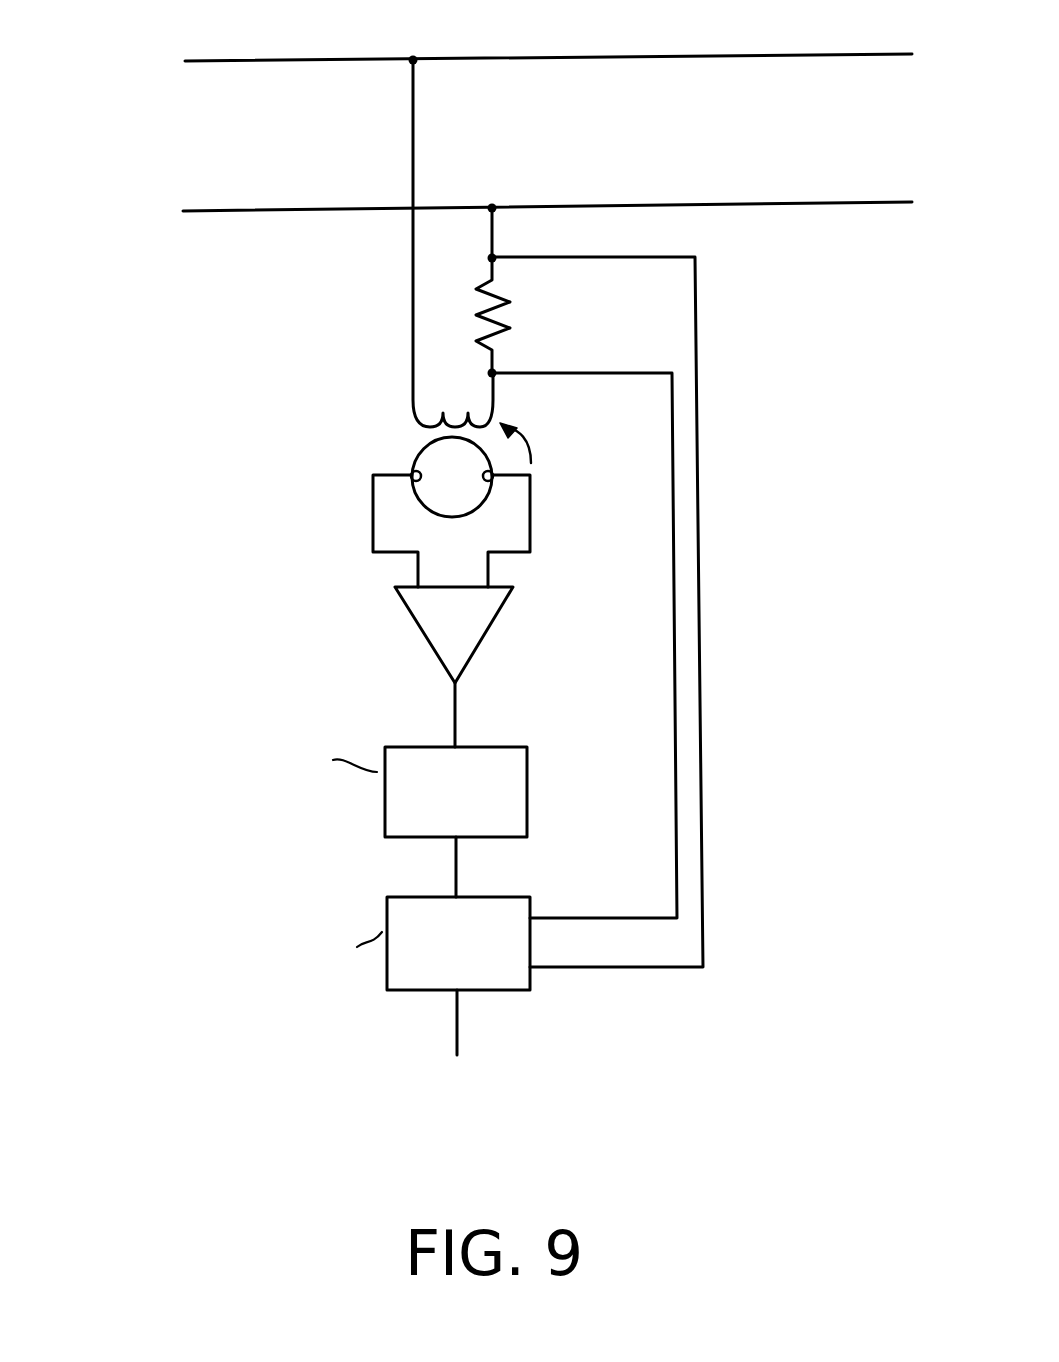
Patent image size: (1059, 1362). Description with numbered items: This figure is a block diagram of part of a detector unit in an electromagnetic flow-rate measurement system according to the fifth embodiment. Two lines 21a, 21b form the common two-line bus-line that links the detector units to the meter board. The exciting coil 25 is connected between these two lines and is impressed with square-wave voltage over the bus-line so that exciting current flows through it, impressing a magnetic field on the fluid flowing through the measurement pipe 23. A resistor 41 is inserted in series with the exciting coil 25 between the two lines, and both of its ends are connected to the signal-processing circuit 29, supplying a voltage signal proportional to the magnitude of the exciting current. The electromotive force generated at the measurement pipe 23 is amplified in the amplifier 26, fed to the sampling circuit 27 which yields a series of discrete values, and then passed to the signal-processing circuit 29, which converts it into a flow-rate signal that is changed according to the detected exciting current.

The bus-line line 21a is at (706, 56).
The bus-line line 21b is at (706, 205).
The resistor 41 is at (520, 322).
The exciting coil 25 is at (412, 426).
The measurement pipe 23 is at (492, 460).
The amplifier 26 is at (495, 625).
The sampling circuit 27 is at (410, 734).
The signal-processing circuit 29 is at (410, 884).